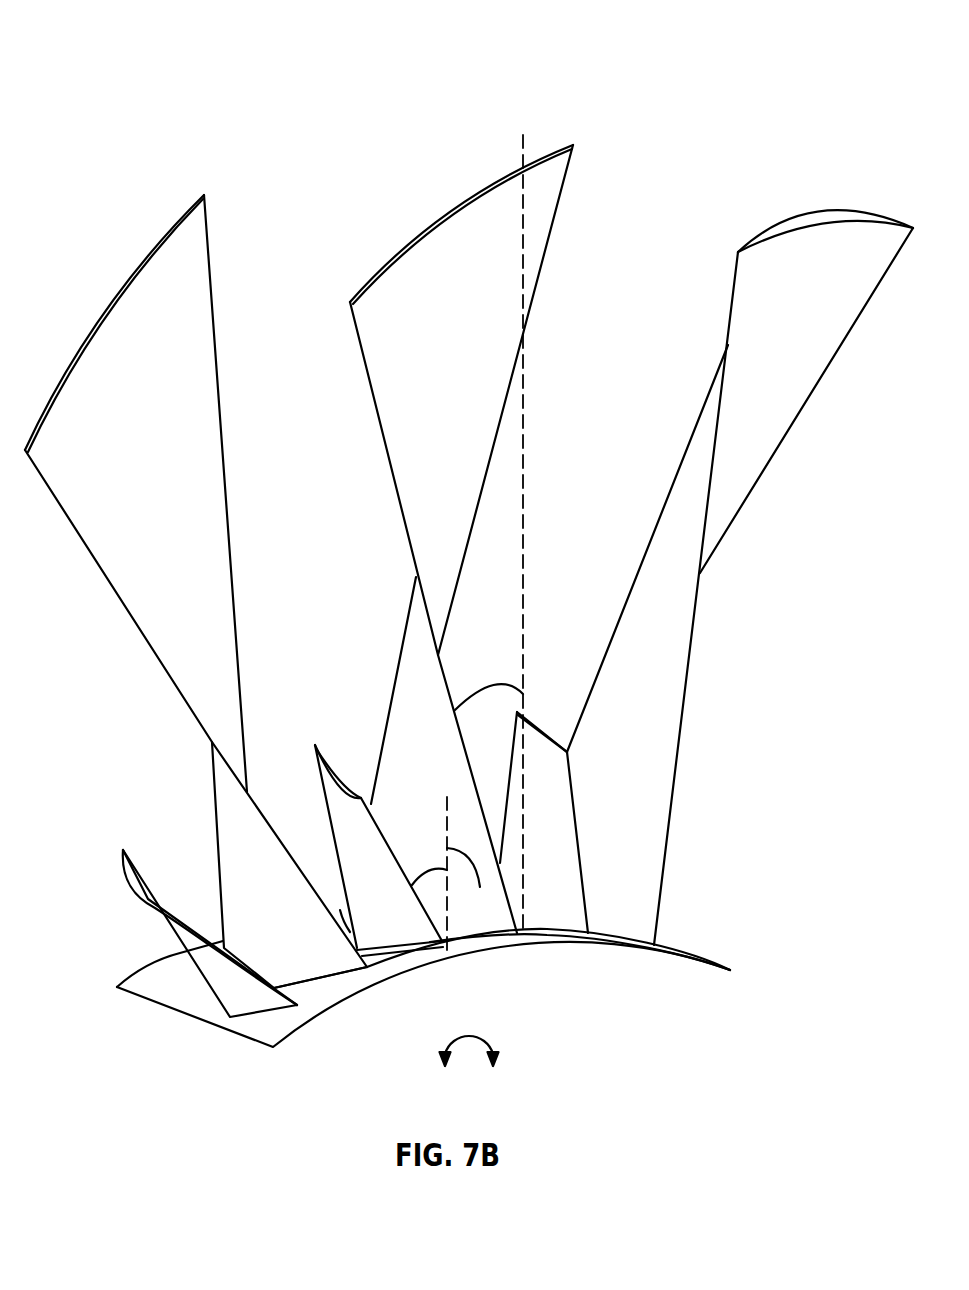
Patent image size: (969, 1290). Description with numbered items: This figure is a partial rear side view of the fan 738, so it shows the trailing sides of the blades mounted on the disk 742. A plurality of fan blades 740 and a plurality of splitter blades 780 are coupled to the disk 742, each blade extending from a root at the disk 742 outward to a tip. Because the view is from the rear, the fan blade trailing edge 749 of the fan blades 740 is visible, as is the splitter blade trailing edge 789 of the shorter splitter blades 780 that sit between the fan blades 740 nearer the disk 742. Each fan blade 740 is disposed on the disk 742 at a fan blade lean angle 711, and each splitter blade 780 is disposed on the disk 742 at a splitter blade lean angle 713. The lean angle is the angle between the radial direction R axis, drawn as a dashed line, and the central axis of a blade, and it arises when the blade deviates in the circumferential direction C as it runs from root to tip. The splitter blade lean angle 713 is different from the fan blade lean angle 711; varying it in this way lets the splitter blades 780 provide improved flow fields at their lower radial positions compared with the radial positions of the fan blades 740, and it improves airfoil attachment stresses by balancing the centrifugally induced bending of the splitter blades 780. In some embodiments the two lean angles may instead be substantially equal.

The fan 738 is at (176, 35).
The fan blade 740 is at (829, 62).
The disk 742 is at (576, 943).
The fan blade trailing edge 749 is at (405, 543).
The splitter blade 780 is at (312, 734).
The splitter blade trailing edge 789 is at (423, 912).
The fan blade lean angle 711 is at (500, 689).
The splitter blade lean angle 713 is at (431, 871).
The radial direction R is at (525, 457).
The circumferential direction C is at (470, 1034).